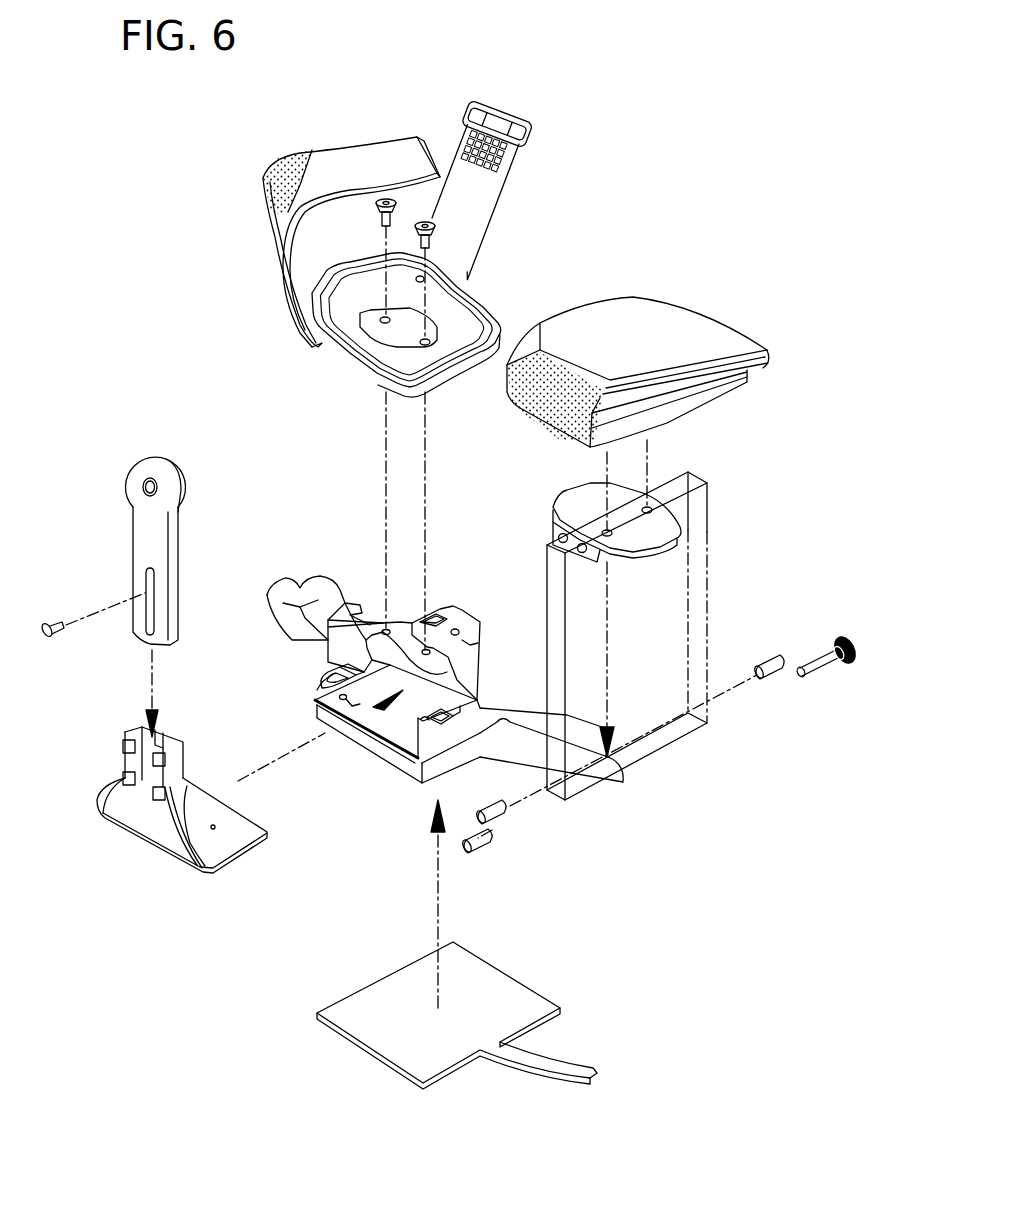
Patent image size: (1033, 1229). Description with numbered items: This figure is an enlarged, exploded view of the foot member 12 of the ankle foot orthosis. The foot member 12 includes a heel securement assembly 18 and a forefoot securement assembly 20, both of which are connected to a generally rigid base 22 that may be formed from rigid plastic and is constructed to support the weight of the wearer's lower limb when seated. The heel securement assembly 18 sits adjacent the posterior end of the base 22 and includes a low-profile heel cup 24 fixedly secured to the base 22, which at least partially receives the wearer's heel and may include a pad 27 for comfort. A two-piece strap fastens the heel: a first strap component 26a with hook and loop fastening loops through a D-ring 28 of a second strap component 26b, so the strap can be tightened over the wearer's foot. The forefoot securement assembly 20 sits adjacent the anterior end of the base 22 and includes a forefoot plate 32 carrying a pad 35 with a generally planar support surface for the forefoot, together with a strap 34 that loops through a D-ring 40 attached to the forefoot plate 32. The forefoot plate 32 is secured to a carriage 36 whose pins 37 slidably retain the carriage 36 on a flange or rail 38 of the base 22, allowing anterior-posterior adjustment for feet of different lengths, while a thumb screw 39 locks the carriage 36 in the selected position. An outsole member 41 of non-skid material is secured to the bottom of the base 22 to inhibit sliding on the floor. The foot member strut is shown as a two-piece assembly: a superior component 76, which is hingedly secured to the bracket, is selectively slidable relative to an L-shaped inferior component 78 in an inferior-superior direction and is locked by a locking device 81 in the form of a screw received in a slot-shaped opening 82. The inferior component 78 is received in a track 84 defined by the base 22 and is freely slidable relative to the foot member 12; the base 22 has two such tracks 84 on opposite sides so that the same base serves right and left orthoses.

The foot member 12 is at (138, 310).
The heel securement assembly 18 is at (333, 373).
The forefoot securement assembly 20 is at (755, 443).
The base 22 is at (407, 765).
The heel cup 24 is at (462, 365).
The first strap component 26a is at (332, 162).
The second strap component 26b is at (480, 198).
The pad 27 is at (463, 323).
The D-ring 28 is at (500, 123).
The forefoot plate 32 is at (722, 395).
The strap 34 is at (680, 310).
The pad 35 is at (660, 387).
The carriage 36 is at (567, 503).
The pins 37 is at (766, 658).
The rail 38 is at (585, 768).
The thumb screw 39 is at (823, 664).
The D-ring 40 is at (757, 362).
The outsole member 41 is at (513, 993).
The superior component 76 is at (145, 513).
The inferior component 78 is at (172, 833).
The locking device 81 is at (50, 622).
The slot-shaped opening 82 is at (148, 632).
The track 84 is at (466, 650).